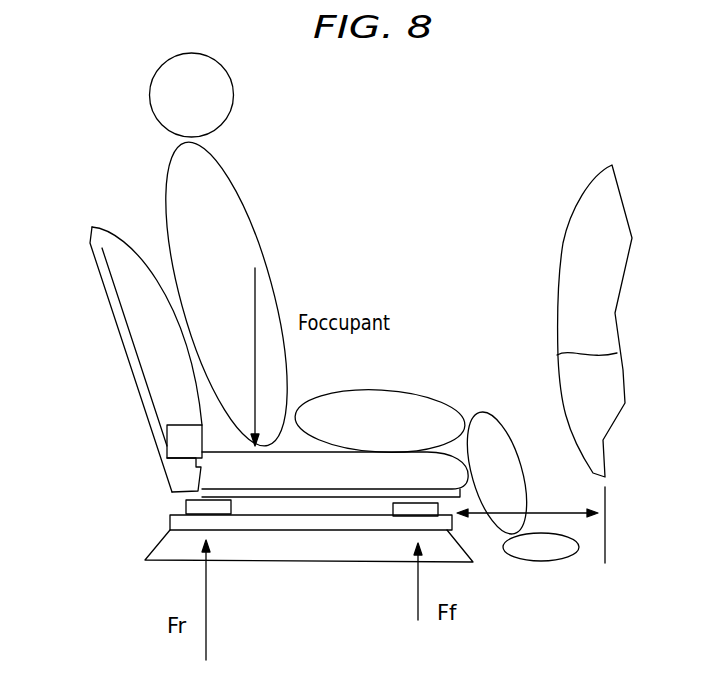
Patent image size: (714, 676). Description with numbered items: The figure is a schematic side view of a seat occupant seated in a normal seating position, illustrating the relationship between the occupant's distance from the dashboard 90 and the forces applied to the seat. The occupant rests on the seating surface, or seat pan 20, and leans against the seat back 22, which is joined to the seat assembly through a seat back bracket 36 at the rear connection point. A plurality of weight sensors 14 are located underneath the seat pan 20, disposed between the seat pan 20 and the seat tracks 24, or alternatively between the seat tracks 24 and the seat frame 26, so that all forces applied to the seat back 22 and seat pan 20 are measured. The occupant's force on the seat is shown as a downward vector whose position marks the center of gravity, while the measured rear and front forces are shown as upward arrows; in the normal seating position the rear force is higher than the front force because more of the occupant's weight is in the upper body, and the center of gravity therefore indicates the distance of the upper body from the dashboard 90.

The seat back 22 is at (122, 336).
The seat back bracket 36 is at (180, 473).
The seat pan 20 is at (312, 473).
The weight sensor 14 is at (217, 508).
The seat track 24 is at (180, 517).
The seat frame 26 is at (448, 555).
The dashboard 90 is at (617, 353).